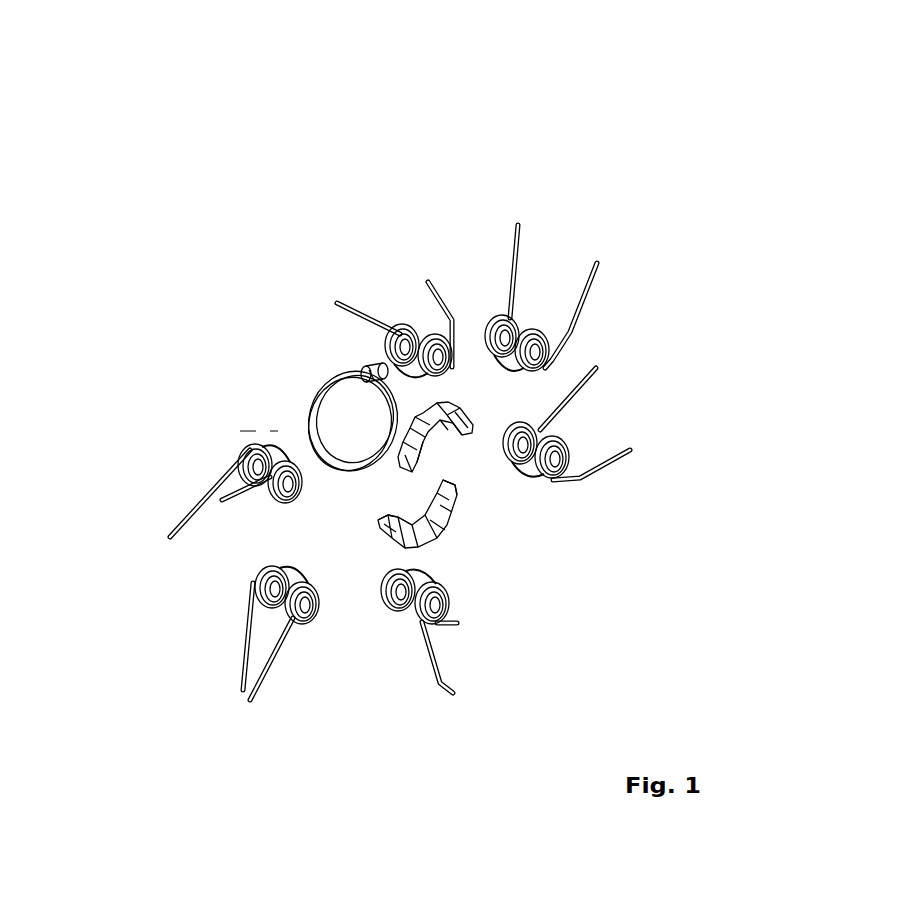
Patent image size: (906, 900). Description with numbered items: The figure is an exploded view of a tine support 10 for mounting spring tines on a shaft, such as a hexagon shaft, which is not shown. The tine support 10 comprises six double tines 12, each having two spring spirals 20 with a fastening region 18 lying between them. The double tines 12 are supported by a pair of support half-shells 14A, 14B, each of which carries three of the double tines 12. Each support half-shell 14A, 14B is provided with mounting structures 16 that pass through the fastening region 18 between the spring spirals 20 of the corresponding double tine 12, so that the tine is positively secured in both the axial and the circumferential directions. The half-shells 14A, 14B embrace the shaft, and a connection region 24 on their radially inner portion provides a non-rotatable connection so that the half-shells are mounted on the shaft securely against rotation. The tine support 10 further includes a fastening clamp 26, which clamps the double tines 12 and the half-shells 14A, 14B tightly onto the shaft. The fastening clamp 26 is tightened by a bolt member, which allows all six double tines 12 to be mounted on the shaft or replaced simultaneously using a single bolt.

The tine support 10 is at (590, 206).
The double tine 12 is at (482, 292).
The support half-shell 14A is at (472, 394).
The support half-shell 14B is at (377, 522).
The mounting structure 16 is at (457, 490).
The fastening region 18 is at (437, 578).
The spring spiral 20 is at (562, 462).
The connection region 24 is at (413, 518).
The fastening clamp 26 is at (318, 390).